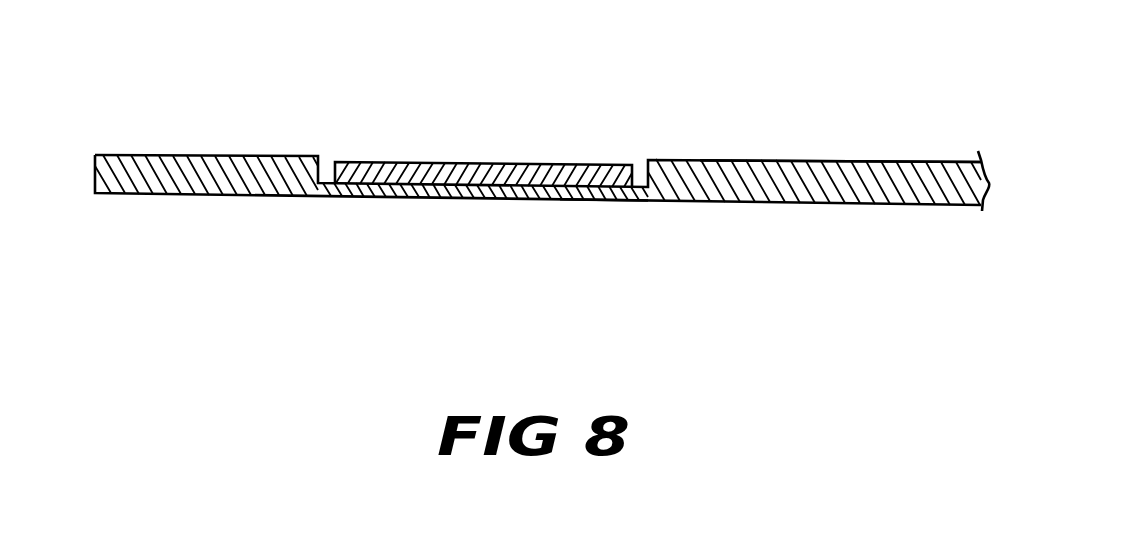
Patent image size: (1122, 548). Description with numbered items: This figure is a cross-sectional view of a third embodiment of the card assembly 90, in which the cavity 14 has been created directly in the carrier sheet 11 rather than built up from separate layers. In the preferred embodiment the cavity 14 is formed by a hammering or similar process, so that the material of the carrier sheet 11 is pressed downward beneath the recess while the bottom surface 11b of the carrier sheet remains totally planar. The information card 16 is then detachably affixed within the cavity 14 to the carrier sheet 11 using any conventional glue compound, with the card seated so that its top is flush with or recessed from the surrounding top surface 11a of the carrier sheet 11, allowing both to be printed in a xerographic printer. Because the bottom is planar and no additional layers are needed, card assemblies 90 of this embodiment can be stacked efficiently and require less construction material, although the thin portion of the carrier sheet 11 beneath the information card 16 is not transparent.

The carrier sheet 11 is at (172, 165).
The top surface of carrier sheet 11a is at (852, 162).
The bottom surface of carrier sheet 11b is at (622, 199).
The cavity 14 is at (542, 151).
The information card 16 is at (486, 178).
The card assembly 90 is at (592, 151).